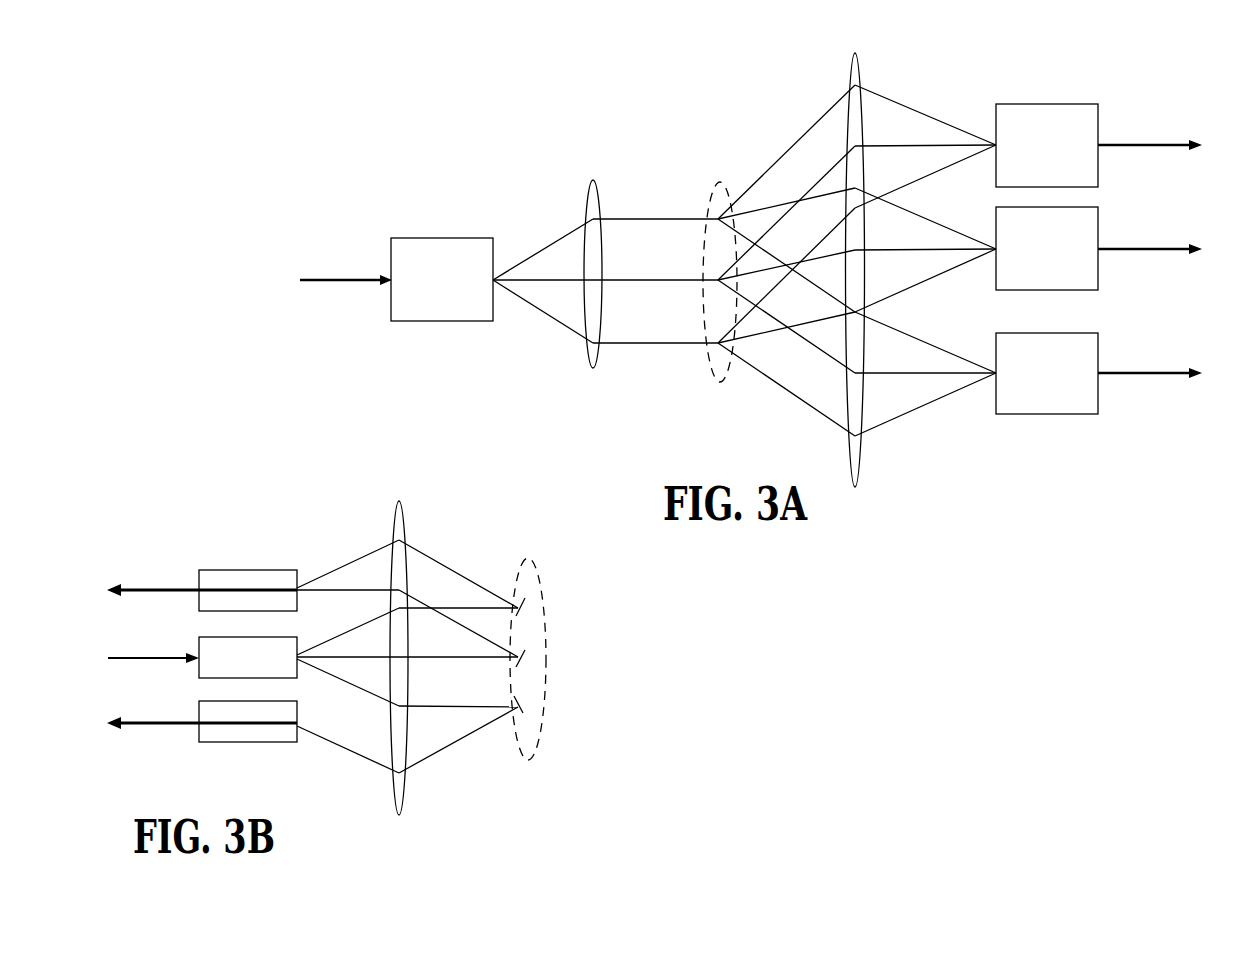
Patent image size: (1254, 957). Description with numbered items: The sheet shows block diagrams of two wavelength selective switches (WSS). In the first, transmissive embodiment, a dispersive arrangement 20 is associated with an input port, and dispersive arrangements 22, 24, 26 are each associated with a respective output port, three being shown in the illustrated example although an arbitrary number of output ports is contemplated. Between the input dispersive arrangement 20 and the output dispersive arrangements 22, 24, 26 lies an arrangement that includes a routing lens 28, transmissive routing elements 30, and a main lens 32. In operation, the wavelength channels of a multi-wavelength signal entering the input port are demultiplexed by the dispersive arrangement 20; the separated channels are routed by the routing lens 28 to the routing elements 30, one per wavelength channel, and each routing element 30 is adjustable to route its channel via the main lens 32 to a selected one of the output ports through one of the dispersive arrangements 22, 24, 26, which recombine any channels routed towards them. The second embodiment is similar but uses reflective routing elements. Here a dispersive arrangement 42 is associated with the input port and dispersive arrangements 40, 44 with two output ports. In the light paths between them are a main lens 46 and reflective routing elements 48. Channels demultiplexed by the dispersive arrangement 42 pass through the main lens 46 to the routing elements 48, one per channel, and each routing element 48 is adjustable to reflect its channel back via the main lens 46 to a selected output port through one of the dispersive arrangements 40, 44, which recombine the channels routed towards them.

In FIG. 3A, the dispersive arrangement 20 is at (390, 243).
In FIG. 3A, the dispersive arrangement 22 is at (1099, 112).
In FIG. 3A, the dispersive arrangement 24 is at (1099, 216).
In FIG. 3A, the dispersive arrangement 26 is at (1099, 340).
In FIG. 3A, the routing lens 28 is at (588, 193).
In FIG. 3A, the transmissive routing elements 30 is at (716, 188).
In FIG. 3A, the main lens 32 is at (852, 60).
In FIG. 3B, the dispersive arrangement 40 is at (203, 612).
In FIG. 3B, the dispersive arrangement 42 is at (203, 678).
In FIG. 3B, the dispersive arrangement 44 is at (206, 742).
In FIG. 3B, the main lens 46 is at (392, 515).
In FIG. 3B, the reflective routing elements 48 is at (518, 566).